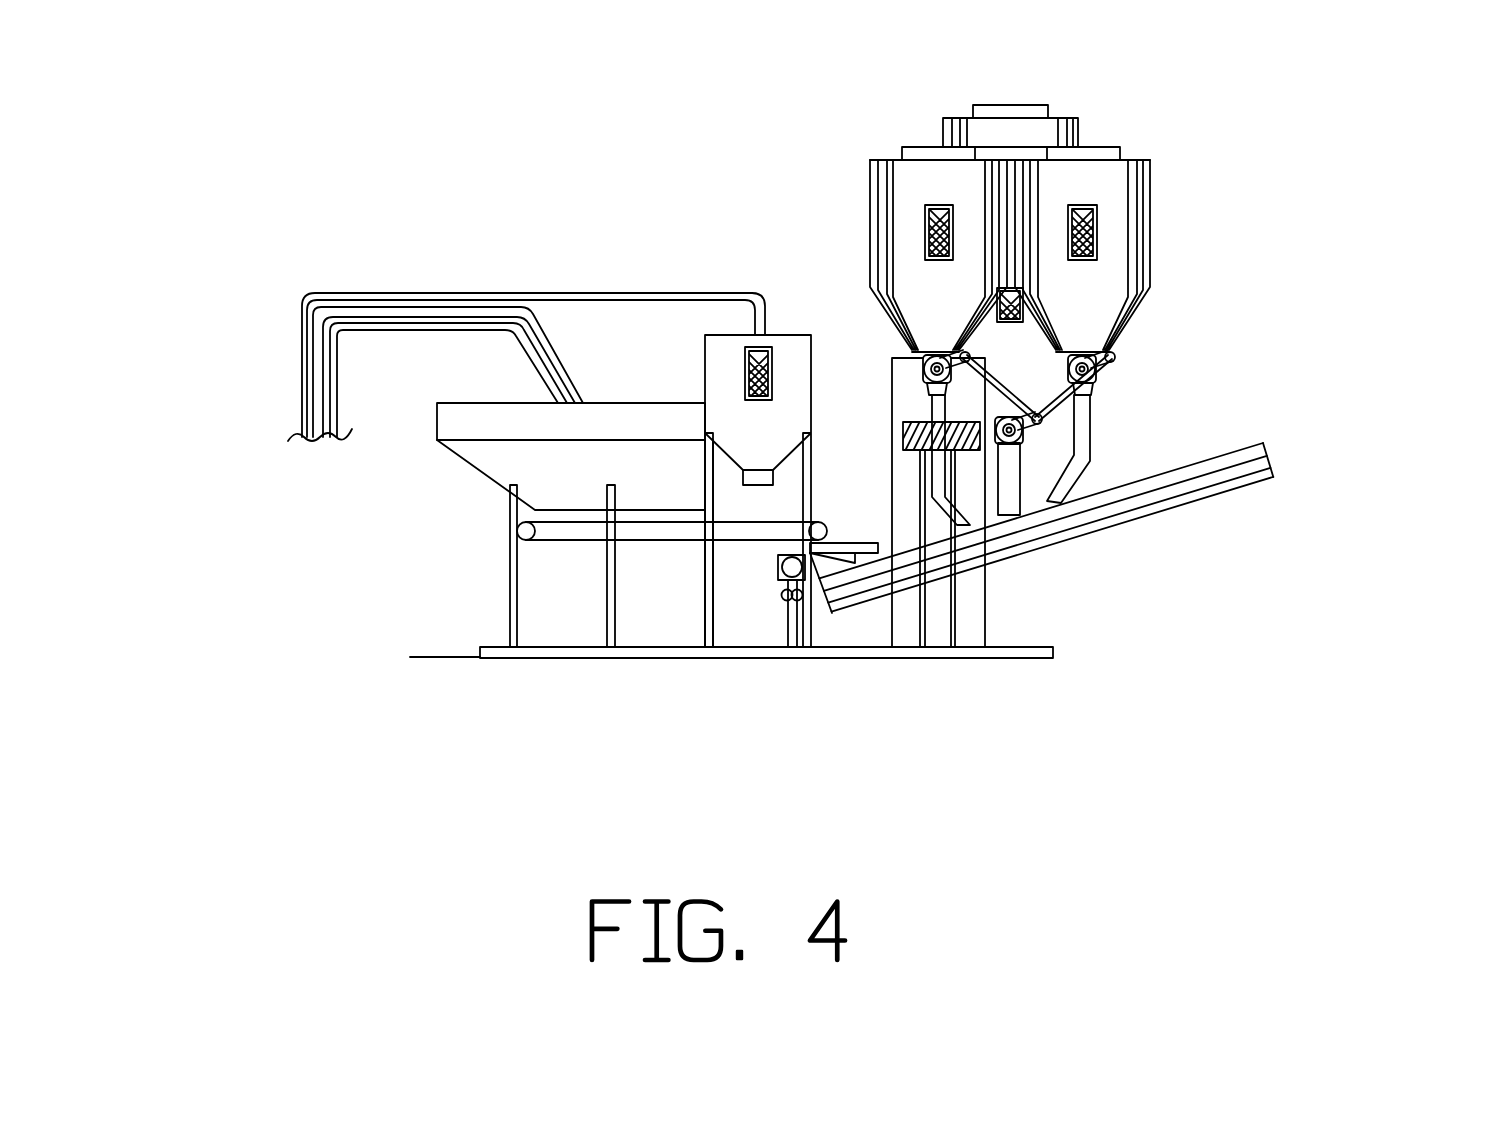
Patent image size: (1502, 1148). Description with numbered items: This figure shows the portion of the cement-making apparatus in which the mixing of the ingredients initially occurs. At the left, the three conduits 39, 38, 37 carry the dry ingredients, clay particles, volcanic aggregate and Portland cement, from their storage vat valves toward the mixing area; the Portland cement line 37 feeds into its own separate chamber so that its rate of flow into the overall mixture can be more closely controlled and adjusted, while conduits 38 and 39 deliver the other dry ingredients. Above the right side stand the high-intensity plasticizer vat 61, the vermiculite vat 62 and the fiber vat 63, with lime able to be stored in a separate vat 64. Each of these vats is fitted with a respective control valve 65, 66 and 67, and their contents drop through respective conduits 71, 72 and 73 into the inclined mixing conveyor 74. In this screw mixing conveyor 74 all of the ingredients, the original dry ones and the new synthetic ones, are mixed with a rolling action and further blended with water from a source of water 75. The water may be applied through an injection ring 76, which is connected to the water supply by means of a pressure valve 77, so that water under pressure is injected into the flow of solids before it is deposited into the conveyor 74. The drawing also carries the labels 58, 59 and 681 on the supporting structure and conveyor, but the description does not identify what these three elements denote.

The conduit 37 is at (505, 300).
The conduit 38 is at (353, 309).
The conduit 39 is at (335, 372).
The conveyor 58 is at (577, 540).
The tray 59 is at (683, 492).
The high-intensity plasticizer vat 61 is at (967, 305).
The vermiculite vat 62 is at (787, 445).
The fiber vat 63 is at (1112, 305).
The lime vat 64 is at (892, 383).
The control valve 65 is at (1040, 369).
The control valve 66 is at (1087, 425).
The control valve 67 is at (1110, 357).
The conduit 71 is at (937, 505).
The conduit 72 is at (1013, 490).
The conduit 73 is at (1093, 383).
The mixing conveyor 74 is at (1217, 477).
The source of water 75 is at (868, 566).
The injection ring 76 is at (777, 570).
The pressure valve 77 is at (785, 607).
The chute outlet 681 is at (1268, 459).